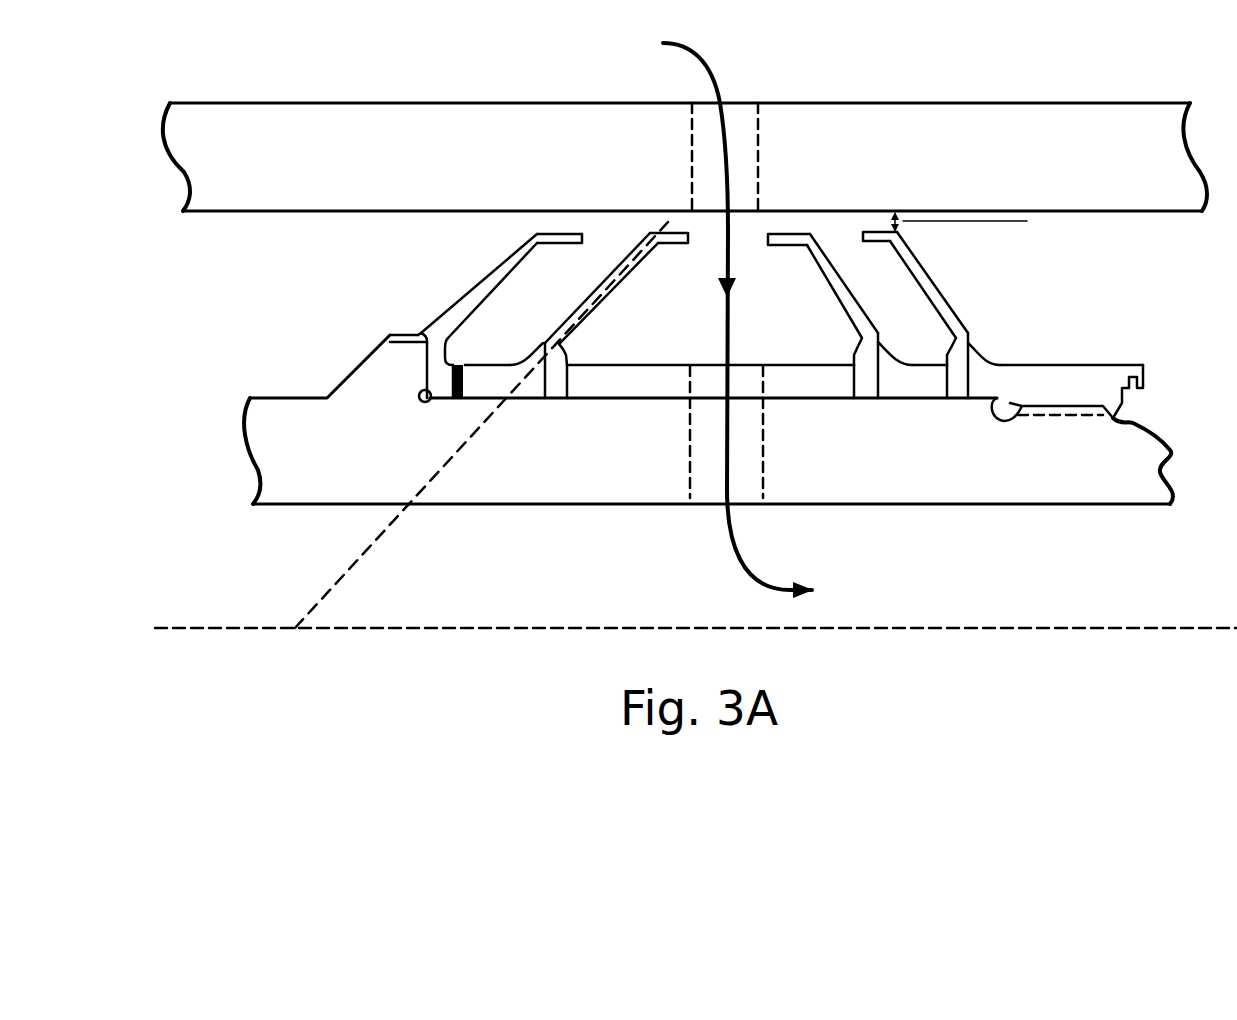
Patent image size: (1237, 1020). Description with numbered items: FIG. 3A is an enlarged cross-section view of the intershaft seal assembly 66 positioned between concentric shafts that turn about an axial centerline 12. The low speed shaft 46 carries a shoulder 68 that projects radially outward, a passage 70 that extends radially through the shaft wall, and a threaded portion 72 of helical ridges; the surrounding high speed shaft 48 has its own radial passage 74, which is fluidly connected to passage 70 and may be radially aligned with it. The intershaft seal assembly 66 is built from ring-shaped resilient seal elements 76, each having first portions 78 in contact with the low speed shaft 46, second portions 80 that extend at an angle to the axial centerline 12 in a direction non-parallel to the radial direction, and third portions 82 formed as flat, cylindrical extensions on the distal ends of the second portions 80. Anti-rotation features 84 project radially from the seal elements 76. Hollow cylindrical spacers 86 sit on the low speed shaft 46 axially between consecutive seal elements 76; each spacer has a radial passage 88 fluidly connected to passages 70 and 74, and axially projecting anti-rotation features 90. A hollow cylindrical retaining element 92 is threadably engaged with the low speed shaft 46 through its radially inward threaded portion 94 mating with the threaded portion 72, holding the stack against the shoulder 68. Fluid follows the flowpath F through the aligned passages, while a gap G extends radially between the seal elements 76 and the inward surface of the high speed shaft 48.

The axial centerline 12 is at (975, 627).
The low speed shaft 46 is at (553, 508).
The high speed shaft 48 is at (595, 98).
The intershaft seal assembly 66 is at (280, 254).
The shoulder 68 is at (647, 312).
The passage 70 is at (763, 462).
The threaded portion 72 is at (1048, 404).
The passage 74 is at (758, 142).
The seal elements 76 is at (649, 314).
The first portions 78 is at (423, 372).
The second portions 80 is at (483, 277).
The third portions 82 is at (562, 248).
The anti-rotation features 84 is at (392, 346).
The spacers 86 is at (493, 364).
The passage 88 is at (804, 412).
The anti-rotation features 90 is at (528, 347).
The retaining element 92 is at (1084, 357).
The threaded portion 94 is at (1077, 418).
The flowpath F is at (716, 63).
The gap G is at (969, 226).